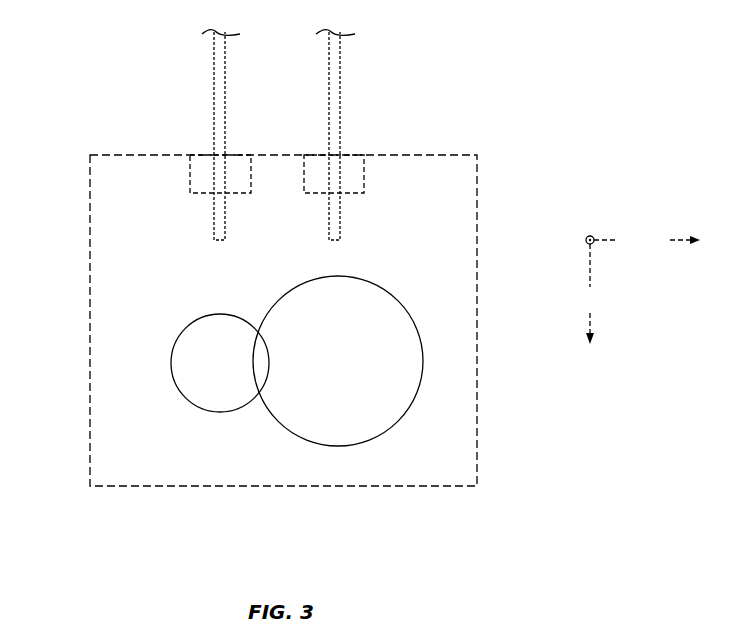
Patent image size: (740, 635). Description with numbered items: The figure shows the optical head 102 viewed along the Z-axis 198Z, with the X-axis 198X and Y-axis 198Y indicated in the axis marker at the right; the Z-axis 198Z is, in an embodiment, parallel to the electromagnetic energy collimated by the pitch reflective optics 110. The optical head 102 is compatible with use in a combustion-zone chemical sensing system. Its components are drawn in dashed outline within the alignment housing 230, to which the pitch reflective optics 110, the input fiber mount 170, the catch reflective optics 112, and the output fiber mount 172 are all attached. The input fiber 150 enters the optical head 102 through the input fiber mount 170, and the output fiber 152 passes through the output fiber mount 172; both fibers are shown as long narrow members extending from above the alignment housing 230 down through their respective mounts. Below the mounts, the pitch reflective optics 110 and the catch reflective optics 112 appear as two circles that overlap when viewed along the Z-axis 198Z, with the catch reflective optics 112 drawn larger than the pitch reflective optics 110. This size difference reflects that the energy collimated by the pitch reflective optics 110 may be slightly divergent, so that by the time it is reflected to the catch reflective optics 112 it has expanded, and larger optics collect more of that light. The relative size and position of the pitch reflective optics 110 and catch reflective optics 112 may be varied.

The optical head 102 is at (524, 97).
The pitch reflective optics 110 is at (187, 393).
The catch reflective optics 112 is at (405, 413).
The input fiber 150 is at (214, 118).
The output fiber 152 is at (340, 120).
The input fiber mount 170 is at (190, 172).
The output fiber mount 172 is at (364, 172).
The alignment housing 230 is at (90, 310).
The X-axis 198X is at (594, 294).
The Y-axis 198Y is at (643, 241).
The Z-axis 198Z is at (593, 243).